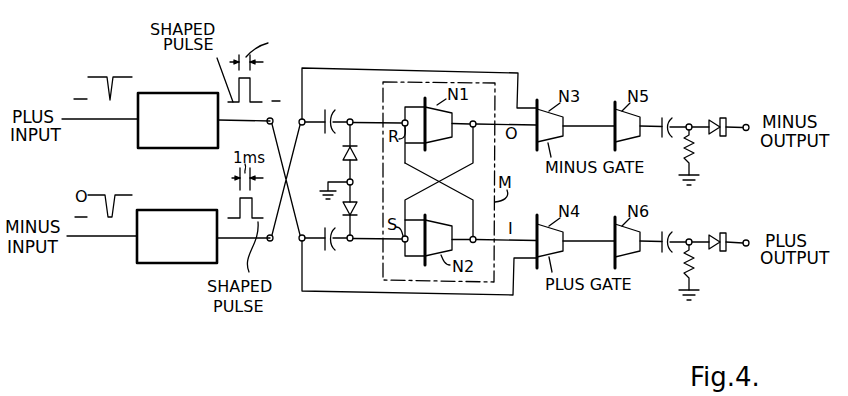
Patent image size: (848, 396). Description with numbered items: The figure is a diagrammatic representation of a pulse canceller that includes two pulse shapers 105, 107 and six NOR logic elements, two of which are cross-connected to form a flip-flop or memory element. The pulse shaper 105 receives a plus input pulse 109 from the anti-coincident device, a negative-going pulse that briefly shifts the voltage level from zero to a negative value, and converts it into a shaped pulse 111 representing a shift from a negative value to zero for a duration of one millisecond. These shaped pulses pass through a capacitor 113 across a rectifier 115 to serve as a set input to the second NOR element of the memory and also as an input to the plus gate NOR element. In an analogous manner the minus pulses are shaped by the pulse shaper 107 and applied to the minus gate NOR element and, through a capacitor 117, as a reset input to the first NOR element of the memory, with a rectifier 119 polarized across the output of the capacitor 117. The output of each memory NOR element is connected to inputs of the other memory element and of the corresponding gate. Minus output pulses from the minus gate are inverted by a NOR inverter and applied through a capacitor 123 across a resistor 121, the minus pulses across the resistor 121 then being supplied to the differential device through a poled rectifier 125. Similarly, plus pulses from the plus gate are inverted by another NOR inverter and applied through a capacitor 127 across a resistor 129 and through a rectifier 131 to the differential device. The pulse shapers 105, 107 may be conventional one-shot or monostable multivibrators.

The pulse shaper 105 is at (194, 150).
The pulse shaper 107 is at (180, 264).
The plus input pulse 109 is at (130, 77).
The shaped pulse 111 is at (258, 103).
The capacitor 113 is at (323, 233).
The rectifier 115 is at (353, 218).
The capacitor 117 is at (333, 112).
The rectifier 119 is at (343, 153).
The resistor 121 is at (694, 157).
The capacitor 123 is at (671, 120).
The rectifier 125 is at (722, 117).
The capacitor 127 is at (670, 236).
The resistor 129 is at (694, 284).
The rectifier 131 is at (722, 233).